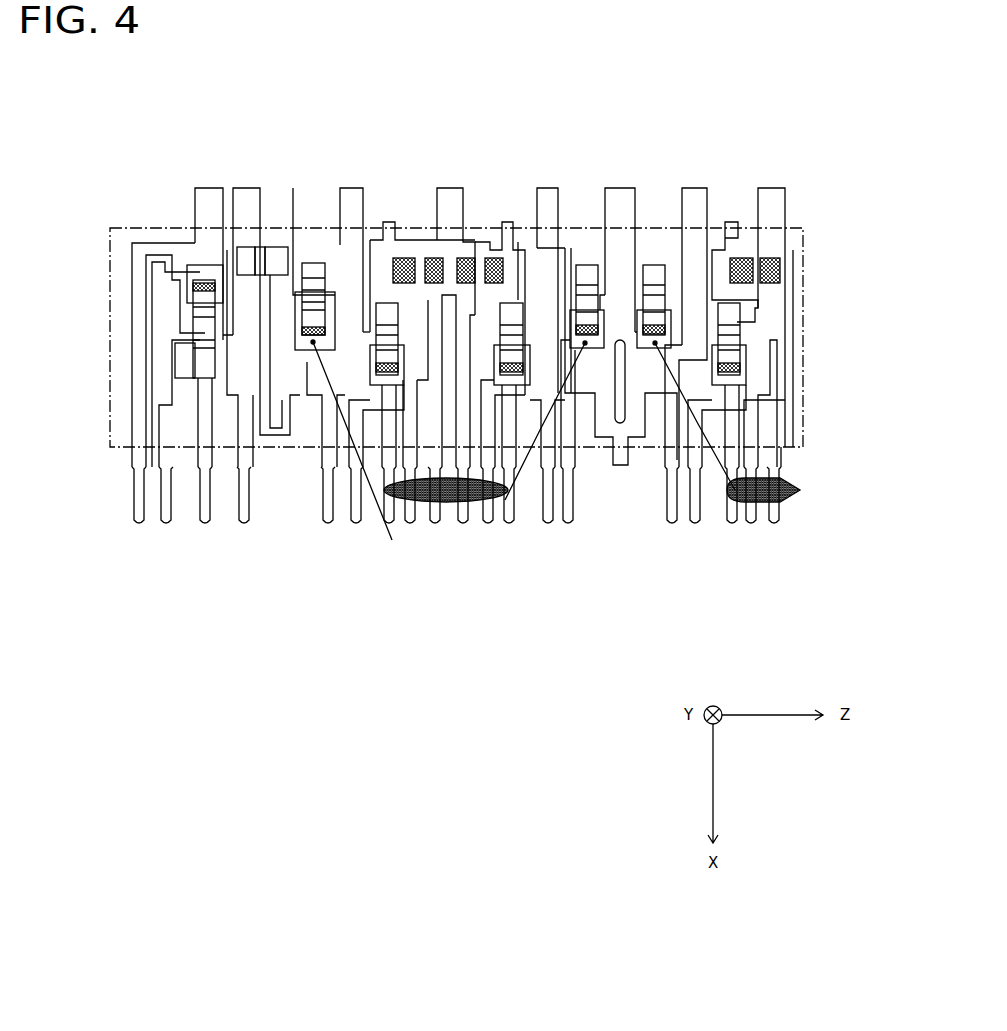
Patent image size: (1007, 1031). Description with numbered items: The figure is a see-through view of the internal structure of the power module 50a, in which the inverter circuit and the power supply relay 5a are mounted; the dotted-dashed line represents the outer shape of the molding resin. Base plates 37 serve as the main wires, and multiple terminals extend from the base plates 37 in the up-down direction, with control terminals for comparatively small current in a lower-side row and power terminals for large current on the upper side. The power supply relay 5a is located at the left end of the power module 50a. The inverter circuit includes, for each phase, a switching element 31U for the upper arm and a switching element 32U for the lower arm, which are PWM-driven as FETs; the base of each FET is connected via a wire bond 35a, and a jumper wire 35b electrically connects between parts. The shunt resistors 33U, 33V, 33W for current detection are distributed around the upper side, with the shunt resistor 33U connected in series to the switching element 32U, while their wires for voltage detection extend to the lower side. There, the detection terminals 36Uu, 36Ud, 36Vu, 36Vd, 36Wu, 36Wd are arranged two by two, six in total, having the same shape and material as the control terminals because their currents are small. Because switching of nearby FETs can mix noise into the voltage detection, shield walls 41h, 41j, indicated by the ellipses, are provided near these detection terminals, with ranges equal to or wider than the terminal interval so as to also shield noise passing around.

The power supply relay 5a is at (168, 342).
The switching element for upper arm 31U is at (303, 296).
The switching element for lower arm 32U is at (386, 384).
The shunt resistor 33U is at (408, 258).
The shunt resistor 33V is at (500, 257).
The shunt resistor 33W is at (775, 258).
The wire bond 35a is at (203, 268).
The jumper wire 35b is at (182, 365).
The detection terminal 36Uu is at (408, 522).
The detection terminal 36Ud is at (432, 524).
The detection terminal 36Vd is at (462, 522).
The detection terminal 36Vu is at (488, 522).
The detection terminal 36Wu is at (754, 522).
The detection terminal 36Wd is at (776, 524).
The base plate 37 is at (805, 393).
The shield wall 41j is at (383, 490).
The shield wall 41h is at (735, 492).
The power module 50a is at (806, 240).